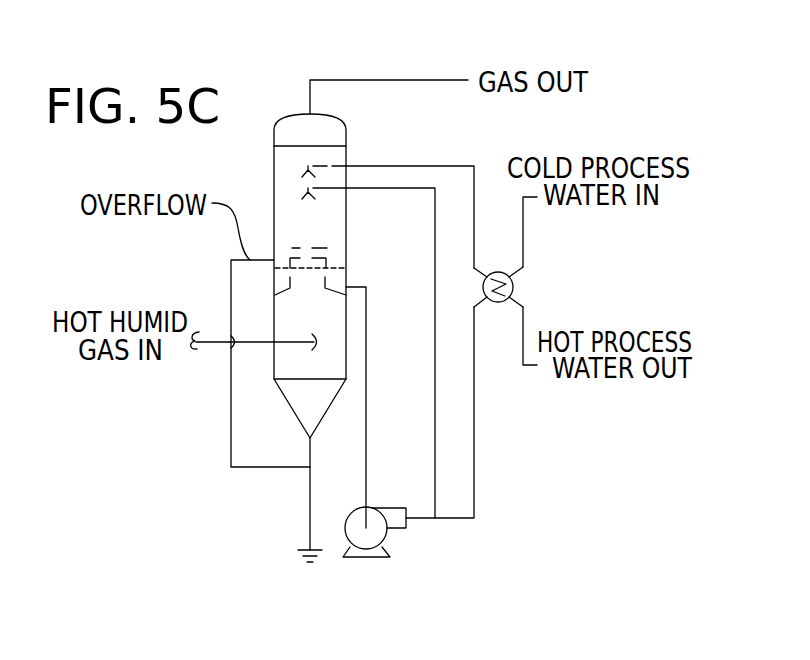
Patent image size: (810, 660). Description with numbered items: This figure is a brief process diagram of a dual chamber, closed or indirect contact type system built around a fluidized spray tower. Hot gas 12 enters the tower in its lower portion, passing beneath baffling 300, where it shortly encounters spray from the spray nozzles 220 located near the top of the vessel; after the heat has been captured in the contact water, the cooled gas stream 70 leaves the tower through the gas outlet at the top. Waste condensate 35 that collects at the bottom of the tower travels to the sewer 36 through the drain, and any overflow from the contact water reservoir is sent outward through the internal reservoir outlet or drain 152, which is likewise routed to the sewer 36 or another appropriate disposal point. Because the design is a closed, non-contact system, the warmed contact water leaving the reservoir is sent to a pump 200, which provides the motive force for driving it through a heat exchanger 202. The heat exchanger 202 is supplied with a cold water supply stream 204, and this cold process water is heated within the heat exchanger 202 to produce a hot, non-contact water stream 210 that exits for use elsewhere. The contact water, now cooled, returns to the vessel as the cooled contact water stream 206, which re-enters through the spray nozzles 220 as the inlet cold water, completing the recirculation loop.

The cooled gas stream 70 is at (401, 80).
The cooled contact water stream 206 is at (388, 166).
The spray nozzles 220 is at (306, 166).
The baffling 300 is at (287, 290).
The hot gas 12 is at (218, 343).
The internal reservoir outlet or drain 152 is at (245, 468).
The waste condensate 35 is at (308, 514).
The sewer 36 is at (306, 557).
The pump 200 is at (388, 538).
The heat exchanger 202 is at (513, 288).
The cold water supply stream 204 is at (529, 228).
The hot, non-contact water stream 210 is at (523, 323).